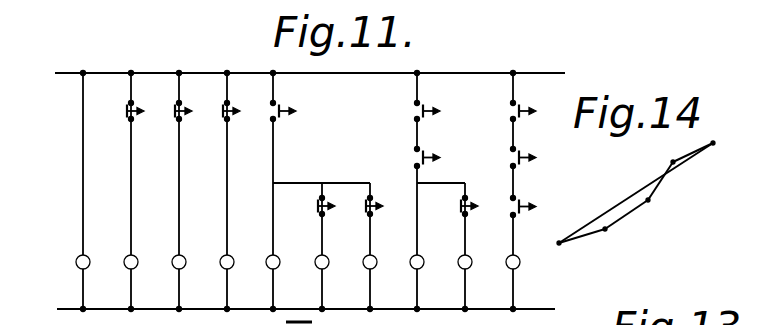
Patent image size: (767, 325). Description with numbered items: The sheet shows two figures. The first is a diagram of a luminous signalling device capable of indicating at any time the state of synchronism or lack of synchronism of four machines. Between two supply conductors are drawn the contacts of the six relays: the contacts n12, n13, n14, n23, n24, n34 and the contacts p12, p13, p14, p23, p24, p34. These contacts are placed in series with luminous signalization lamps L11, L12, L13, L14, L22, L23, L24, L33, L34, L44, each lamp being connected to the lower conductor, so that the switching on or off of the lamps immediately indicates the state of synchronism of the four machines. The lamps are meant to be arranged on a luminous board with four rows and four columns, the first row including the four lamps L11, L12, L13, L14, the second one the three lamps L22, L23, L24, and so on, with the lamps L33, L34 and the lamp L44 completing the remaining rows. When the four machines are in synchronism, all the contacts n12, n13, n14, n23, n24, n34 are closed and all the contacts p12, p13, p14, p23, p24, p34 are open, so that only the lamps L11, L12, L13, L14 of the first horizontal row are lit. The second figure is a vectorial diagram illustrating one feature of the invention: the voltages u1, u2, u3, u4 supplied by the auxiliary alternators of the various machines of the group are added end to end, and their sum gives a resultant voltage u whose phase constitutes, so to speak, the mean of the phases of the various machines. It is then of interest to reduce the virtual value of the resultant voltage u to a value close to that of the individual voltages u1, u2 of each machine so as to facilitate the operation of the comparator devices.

In FIG. 11, the contact n12 is at (123, 120).
In FIG. 11, the contact n13 is at (171, 120).
In FIG. 11, the contact n14 is at (219, 120).
In FIG. 11, the contact n23 is at (315, 215).
In FIG. 11, the contact n24 is at (364, 215).
In FIG. 11, the contact n34 is at (459, 215).
In FIG. 11, the contact p12 is at (287, 120).
In FIG. 11, the contact p13 is at (431, 120).
In FIG. 11, the contact p14 is at (527, 120).
In FIG. 11, the contact p23 is at (431, 166).
In FIG. 11, the contact p24 is at (527, 166).
In FIG. 11, the contact p34 is at (527, 216).
In FIG. 11, the luminous signalization lamp L11 is at (71, 262).
In FIG. 11, the luminous signalization lamp L12 is at (119, 262).
In FIG. 11, the luminous signalization lamp L13 is at (167, 262).
In FIG. 11, the luminous signalization lamp L14 is at (215, 262).
In FIG. 11, the luminous signalization lamp L22 is at (261, 262).
In FIG. 11, the luminous signalization lamp L23 is at (310, 262).
In FIG. 11, the luminous signalization lamp L24 is at (358, 262).
In FIG. 11, the luminous signalization lamp L33 is at (405, 262).
In FIG. 11, the luminous signalization lamp L34 is at (453, 262).
In FIG. 11, the luminous signalization lamp L44 is at (501, 262).
In FIG. 14, the resultant voltage u is at (642, 190).
In FIG. 14, the voltage u1 is at (583, 243).
In FIG. 14, the voltage u2 is at (627, 217).
In FIG. 14, the voltage u3 is at (662, 180).
In FIG. 14, the voltage u4 is at (693, 148).